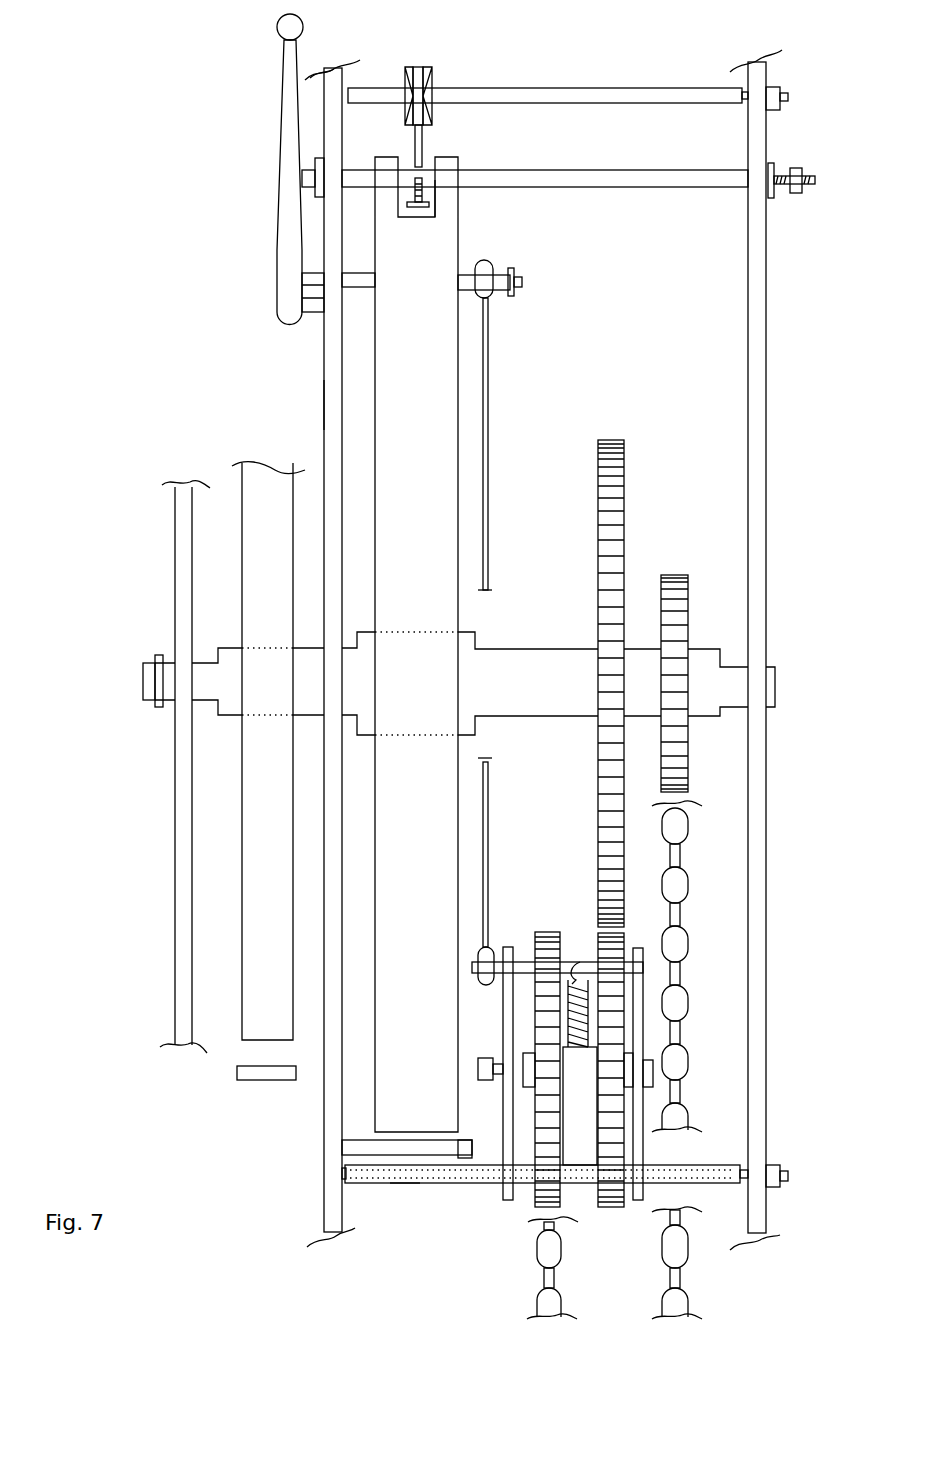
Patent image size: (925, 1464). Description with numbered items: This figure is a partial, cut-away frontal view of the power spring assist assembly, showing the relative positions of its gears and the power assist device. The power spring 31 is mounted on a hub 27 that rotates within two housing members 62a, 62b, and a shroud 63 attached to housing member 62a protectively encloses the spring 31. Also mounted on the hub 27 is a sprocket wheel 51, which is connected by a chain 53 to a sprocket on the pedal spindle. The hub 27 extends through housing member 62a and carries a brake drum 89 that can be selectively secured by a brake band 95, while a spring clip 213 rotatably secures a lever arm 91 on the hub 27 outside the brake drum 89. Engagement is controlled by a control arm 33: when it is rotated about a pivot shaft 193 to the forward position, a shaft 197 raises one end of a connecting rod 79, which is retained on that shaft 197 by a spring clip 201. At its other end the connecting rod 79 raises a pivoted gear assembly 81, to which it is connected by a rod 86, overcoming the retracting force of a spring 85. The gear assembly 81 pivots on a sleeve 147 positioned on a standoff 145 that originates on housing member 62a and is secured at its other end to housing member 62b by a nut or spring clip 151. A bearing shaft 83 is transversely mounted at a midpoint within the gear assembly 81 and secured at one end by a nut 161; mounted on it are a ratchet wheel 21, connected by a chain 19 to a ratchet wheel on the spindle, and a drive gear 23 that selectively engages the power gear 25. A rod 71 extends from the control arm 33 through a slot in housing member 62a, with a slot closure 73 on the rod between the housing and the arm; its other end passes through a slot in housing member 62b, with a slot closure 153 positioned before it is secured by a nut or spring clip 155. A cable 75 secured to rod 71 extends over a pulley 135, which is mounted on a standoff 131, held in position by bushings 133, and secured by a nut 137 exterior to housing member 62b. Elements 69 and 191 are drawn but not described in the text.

The chain 19 is at (535, 1300).
The ratchet wheel 21 is at (535, 1207).
The drive gear 23 is at (610, 1207).
The power gear 25 is at (600, 758).
The hub 27 is at (502, 663).
The power spring 31 is at (324, 435).
The control arm 33 is at (288, 247).
The sprocket wheel 51 is at (690, 622).
The chain 53 is at (686, 915).
The housing member 62a is at (324, 405).
The housing member 62b is at (766, 572).
The shroud 63 is at (358, 1145).
The adjusting bolt 69 is at (430, 202).
The rod 71 is at (540, 170).
The slot closure 73 is at (318, 165).
The cable 75 is at (423, 152).
The connecting rod 79 is at (490, 340).
The pivoted gear assembly 81 is at (650, 1152).
The bearing shaft 83 is at (585, 1080).
The spring 85 is at (590, 1030).
The rod 86 is at (578, 962).
The brake drum 89 is at (250, 1025).
The lever arm 91 is at (190, 833).
The brake band 95 is at (272, 1080).
The standoff 131 is at (335, 68).
The bushings 133 is at (383, 84).
The pulley 135 is at (435, 70).
The nut 137 is at (787, 98).
The standoff 145 is at (347, 1180).
The sleeve 147 is at (402, 1183).
The nut or spring clip 151 is at (782, 1188).
The slot closure 153 is at (775, 163).
The nut or spring clip 155 is at (800, 193).
The nut 161 is at (482, 1080).
The housing wall 191 is at (445, 195).
The pivot shaft 193 is at (313, 312).
The shaft 197 is at (360, 273).
The spring clip 201 is at (515, 282).
The spring clip 213 is at (155, 707).